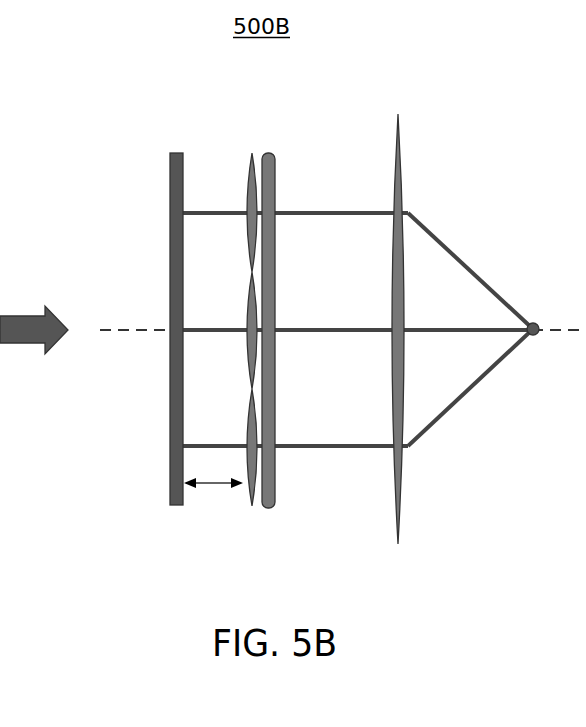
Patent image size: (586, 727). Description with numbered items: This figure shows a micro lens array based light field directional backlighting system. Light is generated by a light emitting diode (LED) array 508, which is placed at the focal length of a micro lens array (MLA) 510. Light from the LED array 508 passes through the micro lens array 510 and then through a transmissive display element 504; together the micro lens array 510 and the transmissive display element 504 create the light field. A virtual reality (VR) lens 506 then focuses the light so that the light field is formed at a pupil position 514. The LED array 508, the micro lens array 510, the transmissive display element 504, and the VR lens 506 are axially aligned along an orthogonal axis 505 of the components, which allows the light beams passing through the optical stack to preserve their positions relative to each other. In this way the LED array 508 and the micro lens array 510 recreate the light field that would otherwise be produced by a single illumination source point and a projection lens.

The transmissive display element 504 is at (270, 153).
The orthogonal axis 505 is at (143, 347).
The virtual reality (VR) lens 506 is at (397, 112).
The light emitting diode (LED) array 508 is at (172, 153).
The micro lens array (MLA) 510 is at (250, 153).
The pupil position 514 is at (549, 354).